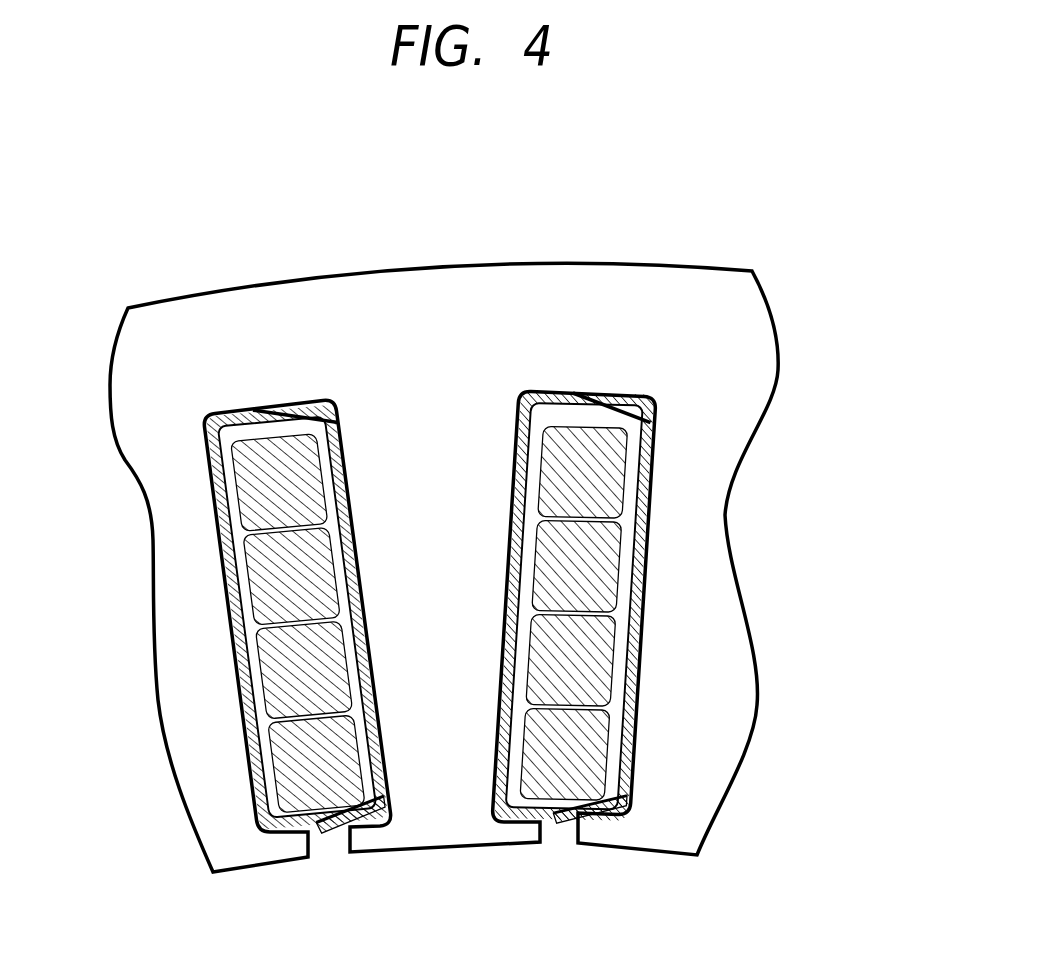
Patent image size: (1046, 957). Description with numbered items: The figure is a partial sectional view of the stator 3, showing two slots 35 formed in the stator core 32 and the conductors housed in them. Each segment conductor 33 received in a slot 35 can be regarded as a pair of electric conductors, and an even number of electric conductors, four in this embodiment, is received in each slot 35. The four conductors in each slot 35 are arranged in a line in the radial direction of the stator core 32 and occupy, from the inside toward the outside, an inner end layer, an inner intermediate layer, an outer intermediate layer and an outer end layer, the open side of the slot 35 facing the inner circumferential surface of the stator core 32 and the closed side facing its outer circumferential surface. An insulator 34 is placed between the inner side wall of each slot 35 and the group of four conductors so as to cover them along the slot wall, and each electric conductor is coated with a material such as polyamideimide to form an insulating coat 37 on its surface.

The stator 3 is at (712, 210).
The stator core 32 is at (492, 285).
The segment conductor 33 is at (613, 498).
The insulator 34 is at (687, 421).
The slot 35 is at (232, 408).
The insulating coat 37 is at (245, 491).